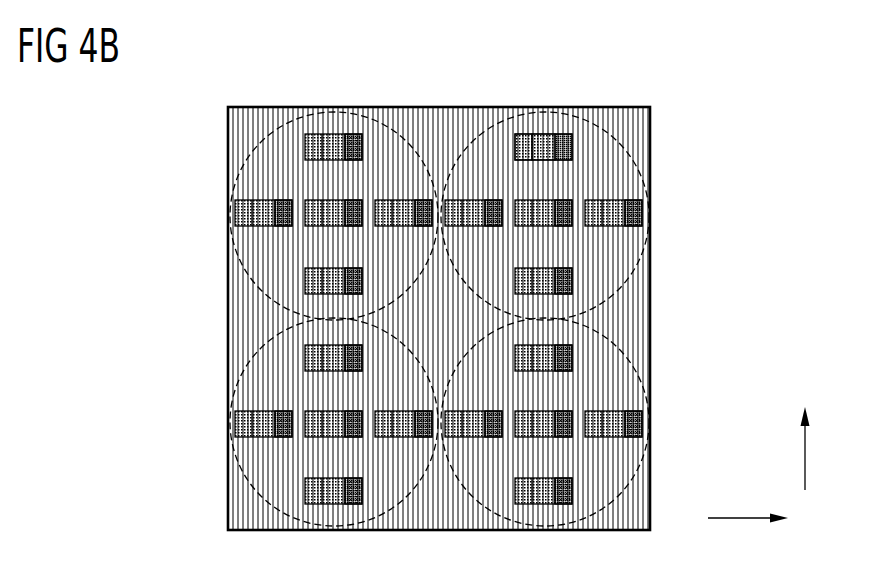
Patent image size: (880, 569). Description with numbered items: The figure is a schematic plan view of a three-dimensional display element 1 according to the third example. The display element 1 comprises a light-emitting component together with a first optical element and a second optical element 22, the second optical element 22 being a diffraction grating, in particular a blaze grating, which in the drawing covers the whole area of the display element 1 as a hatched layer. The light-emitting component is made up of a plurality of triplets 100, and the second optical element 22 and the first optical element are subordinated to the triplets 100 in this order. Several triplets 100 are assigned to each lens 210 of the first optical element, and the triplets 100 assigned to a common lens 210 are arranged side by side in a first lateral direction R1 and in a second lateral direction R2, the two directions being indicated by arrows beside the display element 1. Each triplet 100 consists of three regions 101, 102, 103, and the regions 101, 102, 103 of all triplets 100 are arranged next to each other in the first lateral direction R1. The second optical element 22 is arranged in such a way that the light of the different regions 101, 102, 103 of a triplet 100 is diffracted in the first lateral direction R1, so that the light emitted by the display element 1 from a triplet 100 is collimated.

The 3D display element 1 is at (663, 103).
The second optical element 22 is at (230, 317).
The lens 210 is at (258, 362).
The triplet 100 is at (617, 50).
The region 101 is at (578, 137).
The region 102 is at (540, 137).
The region 103 is at (518, 136).
The first lateral direction R1 is at (748, 505).
The second lateral direction R2 is at (821, 448).